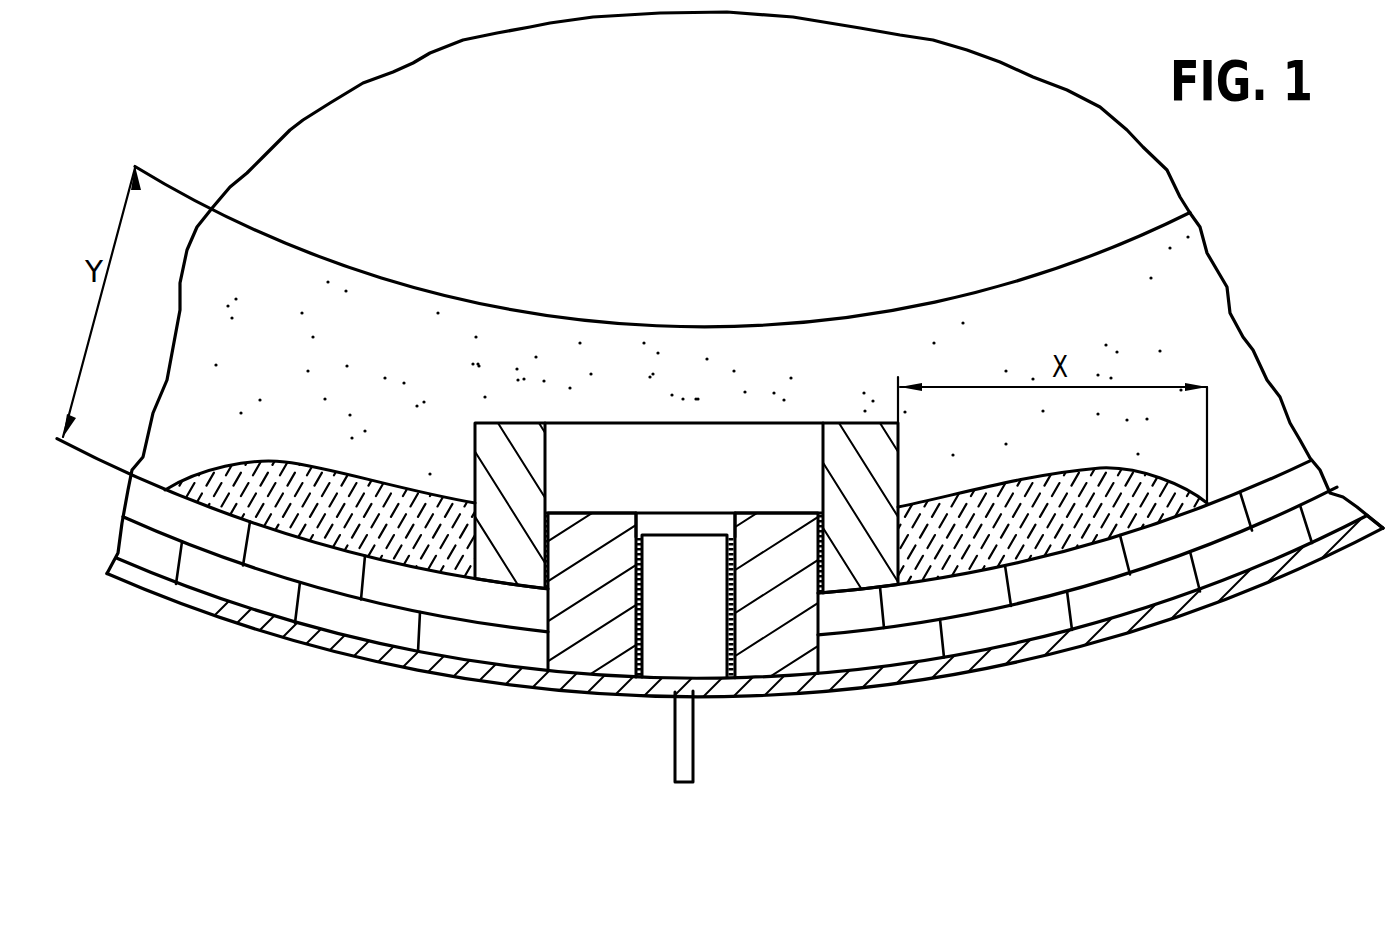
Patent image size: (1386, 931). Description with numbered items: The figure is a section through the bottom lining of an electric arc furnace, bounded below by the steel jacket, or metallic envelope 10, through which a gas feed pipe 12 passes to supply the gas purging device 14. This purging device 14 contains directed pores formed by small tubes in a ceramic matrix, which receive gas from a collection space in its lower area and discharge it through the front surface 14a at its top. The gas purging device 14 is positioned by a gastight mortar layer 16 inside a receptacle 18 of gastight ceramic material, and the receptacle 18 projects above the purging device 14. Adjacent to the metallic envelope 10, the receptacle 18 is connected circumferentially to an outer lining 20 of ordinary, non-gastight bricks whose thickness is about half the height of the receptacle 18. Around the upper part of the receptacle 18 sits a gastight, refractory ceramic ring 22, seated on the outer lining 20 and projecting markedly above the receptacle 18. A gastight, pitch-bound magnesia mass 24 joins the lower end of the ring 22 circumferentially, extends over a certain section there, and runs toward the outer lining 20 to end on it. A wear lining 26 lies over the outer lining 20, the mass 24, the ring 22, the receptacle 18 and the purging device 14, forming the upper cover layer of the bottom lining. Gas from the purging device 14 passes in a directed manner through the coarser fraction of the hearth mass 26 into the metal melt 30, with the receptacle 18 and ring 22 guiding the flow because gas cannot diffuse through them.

The steel jacket 10 is at (968, 673).
The gas feed pipe 12 is at (683, 764).
The gas purging device 14 is at (677, 613).
The front surface 14a is at (670, 531).
The gastight mortar layer 16 is at (737, 680).
The receptacle 18 is at (785, 617).
The outer lining 20 is at (250, 585).
The ceramic ring 22 is at (515, 457).
The magnesia mass 24 is at (343, 507).
The wear lining 26 is at (815, 345).
The metal melt 30 is at (707, 118).